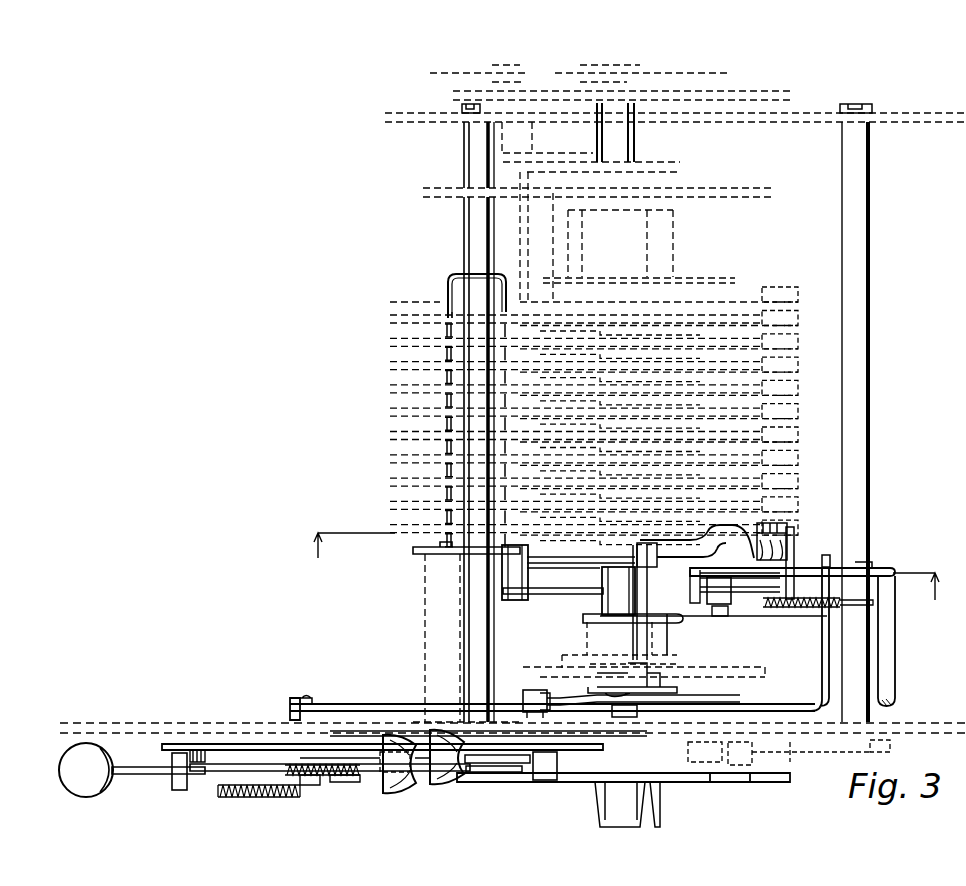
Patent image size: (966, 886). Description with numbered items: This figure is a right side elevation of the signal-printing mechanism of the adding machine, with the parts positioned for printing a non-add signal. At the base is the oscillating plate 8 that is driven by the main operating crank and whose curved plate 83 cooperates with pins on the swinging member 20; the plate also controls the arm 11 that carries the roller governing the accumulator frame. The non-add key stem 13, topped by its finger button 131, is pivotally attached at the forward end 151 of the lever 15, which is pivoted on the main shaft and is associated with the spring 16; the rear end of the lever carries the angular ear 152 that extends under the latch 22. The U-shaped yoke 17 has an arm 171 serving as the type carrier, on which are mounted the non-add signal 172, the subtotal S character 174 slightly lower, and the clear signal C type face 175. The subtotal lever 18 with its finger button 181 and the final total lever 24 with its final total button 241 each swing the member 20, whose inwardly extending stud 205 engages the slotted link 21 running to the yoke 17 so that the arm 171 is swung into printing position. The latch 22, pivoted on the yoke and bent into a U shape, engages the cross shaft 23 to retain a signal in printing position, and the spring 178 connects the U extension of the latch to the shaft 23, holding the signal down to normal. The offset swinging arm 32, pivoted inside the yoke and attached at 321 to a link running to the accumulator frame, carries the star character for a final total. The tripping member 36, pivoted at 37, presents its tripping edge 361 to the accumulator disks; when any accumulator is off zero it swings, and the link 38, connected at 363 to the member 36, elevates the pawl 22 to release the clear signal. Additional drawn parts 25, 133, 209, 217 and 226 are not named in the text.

The oscillating plate 8 is at (688, 783).
The arm 11 is at (629, 579).
The non-add key stem 13 is at (143, 775).
The lever 15 is at (770, 704).
The spring 16 is at (252, 798).
The U-shaped yoke 17 is at (658, 643).
The subtotal key or lever 18 is at (518, 773).
The swinging member 20 is at (222, 744).
The slotted link 21 is at (565, 680).
The latch 22 is at (786, 576).
The shaft 23 is at (864, 566).
The final total lever 24 is at (896, 673).
The rod 25 is at (252, 764).
The swinging arm 32 is at (618, 591).
The tripping member 36 is at (457, 274).
The pivot 37 is at (477, 629).
The link 38 is at (687, 634).
The plate 83 is at (550, 765).
The finger button 131 is at (88, 797).
The collar 133 is at (200, 750).
The forward end of lever 151 is at (308, 698).
The angular ear 152 is at (822, 647).
The arm of yoke 171 is at (735, 600).
The non-add signal 172 is at (785, 527).
The S character 174 is at (788, 548).
The C type face 175 is at (805, 563).
The spring 178 is at (788, 607).
The finger button 181 is at (393, 794).
The stud 205 is at (535, 690).
The collar 209 is at (178, 790).
The spring 217 is at (348, 782).
The latch member 226 is at (725, 606).
The final total button 241 is at (436, 786).
The attachment point on arm 321 is at (740, 528).
The tripping portion 361 is at (456, 296).
The pivotal connection 363 is at (514, 600).